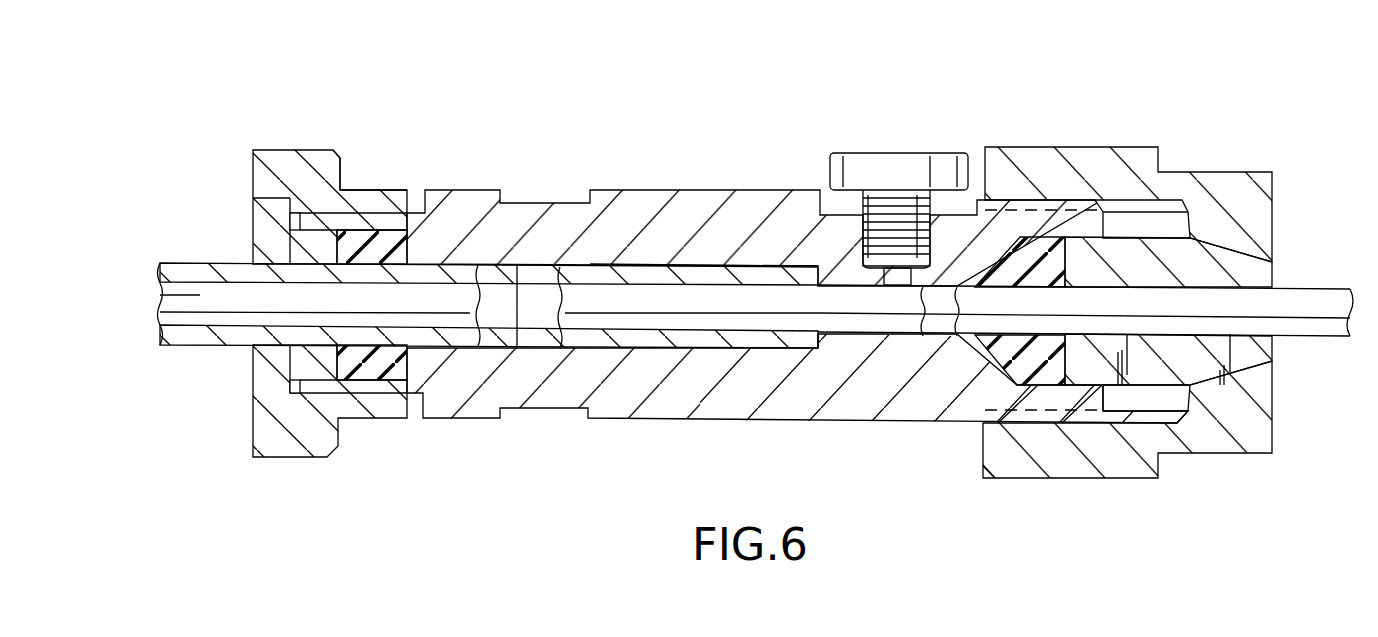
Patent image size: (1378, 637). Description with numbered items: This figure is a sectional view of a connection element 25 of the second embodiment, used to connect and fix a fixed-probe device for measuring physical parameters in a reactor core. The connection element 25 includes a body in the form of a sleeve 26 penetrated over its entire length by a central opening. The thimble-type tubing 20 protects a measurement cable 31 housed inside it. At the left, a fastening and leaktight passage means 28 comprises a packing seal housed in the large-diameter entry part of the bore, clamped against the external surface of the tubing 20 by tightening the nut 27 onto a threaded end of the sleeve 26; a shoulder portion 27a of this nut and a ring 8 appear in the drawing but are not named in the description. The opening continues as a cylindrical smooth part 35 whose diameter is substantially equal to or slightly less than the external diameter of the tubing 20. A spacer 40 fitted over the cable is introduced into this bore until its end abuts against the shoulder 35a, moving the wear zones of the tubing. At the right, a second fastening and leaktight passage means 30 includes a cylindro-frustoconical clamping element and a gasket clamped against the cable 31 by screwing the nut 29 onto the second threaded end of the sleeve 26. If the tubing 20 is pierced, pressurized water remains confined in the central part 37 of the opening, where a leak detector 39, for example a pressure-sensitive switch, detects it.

The thimble-type tubing 20 is at (207, 340).
The measurement cable 31 is at (183, 290).
The fastening and leaktight passage means 28 is at (303, 289).
The nut 27 is at (313, 457).
The nut flange shoulder 27a is at (338, 165).
The washer 8 is at (290, 388).
The connection element 25 is at (797, 284).
The cylindrical smooth part 35 is at (567, 347).
The sleeve 26 is at (873, 397).
The spacer 40 is at (717, 337).
The shoulder 35a is at (807, 337).
The central part of the opening 37 is at (940, 320).
The leak detector 39 is at (895, 153).
The fastening and leaktight passage means 30 is at (1160, 261).
The nut 29 is at (1247, 423).